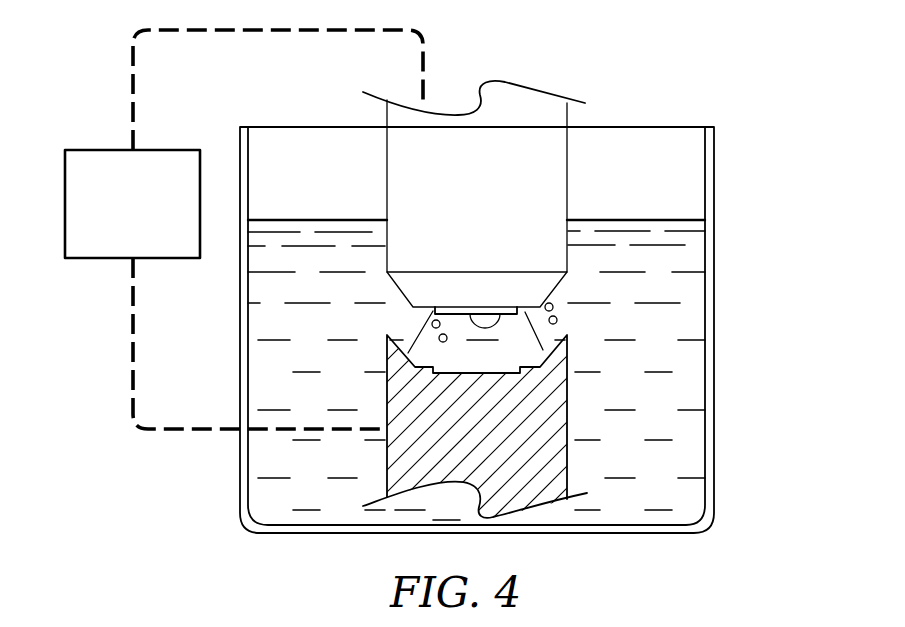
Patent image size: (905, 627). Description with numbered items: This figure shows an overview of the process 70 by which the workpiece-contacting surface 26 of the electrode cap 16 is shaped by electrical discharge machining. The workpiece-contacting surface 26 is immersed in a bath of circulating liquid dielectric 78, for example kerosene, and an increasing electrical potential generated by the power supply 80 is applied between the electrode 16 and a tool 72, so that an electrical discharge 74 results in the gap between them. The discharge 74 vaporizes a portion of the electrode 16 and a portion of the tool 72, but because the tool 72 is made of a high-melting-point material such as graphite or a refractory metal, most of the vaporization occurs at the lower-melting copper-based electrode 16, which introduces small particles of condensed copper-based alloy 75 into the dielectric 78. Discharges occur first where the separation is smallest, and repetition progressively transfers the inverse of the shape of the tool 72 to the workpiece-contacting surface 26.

The electrode 16 is at (387, 160).
The workpiece-contacting surface 26 is at (495, 320).
The process overview 70 is at (715, 332).
The tool 72 is at (567, 425).
The electrical discharge 74 is at (418, 337).
The particles of condensed copper-based alloy 75 is at (445, 334).
The liquid dielectric 78 is at (682, 261).
The power supply 80 is at (95, 150).